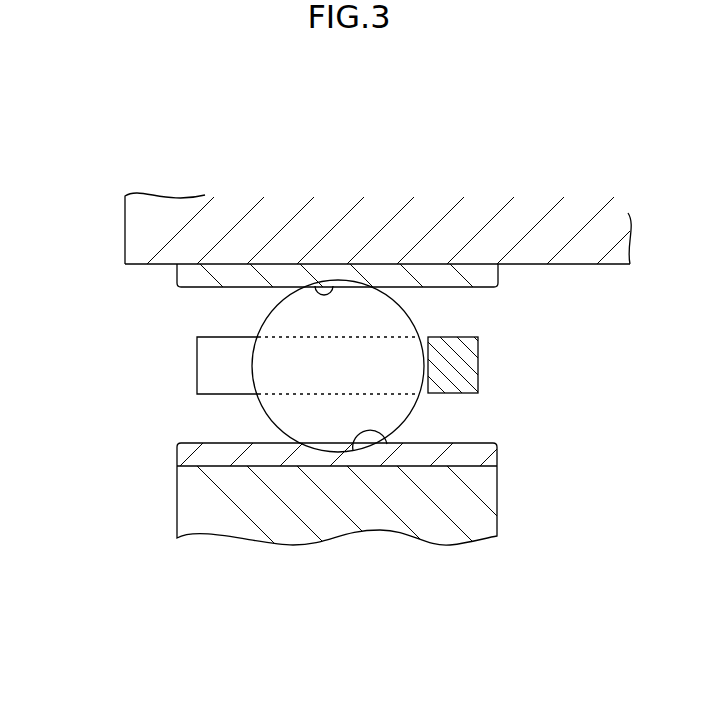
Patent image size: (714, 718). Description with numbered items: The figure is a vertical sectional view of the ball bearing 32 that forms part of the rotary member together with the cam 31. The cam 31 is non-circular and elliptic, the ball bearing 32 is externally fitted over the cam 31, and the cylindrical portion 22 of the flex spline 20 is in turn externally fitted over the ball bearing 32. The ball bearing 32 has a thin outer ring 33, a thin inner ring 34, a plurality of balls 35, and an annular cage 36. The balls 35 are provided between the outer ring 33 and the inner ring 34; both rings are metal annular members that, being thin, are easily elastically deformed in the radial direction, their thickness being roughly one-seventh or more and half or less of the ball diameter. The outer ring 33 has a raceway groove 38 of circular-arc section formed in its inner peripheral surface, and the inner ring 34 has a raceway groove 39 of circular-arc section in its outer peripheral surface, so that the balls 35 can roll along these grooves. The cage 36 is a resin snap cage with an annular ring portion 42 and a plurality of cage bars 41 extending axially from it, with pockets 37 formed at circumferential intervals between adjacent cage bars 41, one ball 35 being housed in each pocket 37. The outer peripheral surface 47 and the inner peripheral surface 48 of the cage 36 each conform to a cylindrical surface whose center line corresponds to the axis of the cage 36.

The flex spline 20 is at (351, 237).
The cylindrical portion 22 is at (142, 225).
The cam 31 is at (483, 493).
The ball bearing 32 is at (472, 254).
The outer ring 33 is at (232, 275).
The inner ring 34 is at (220, 459).
The ball 35 is at (285, 363).
The cage 36 is at (387, 361).
The pocket 37 is at (392, 318).
The raceway groove 38 is at (317, 289).
The raceway groove 39 is at (387, 443).
The cage bar 41 is at (300, 372).
The ring portion 42 is at (470, 377).
The outer peripheral surface 47 is at (228, 337).
The inner peripheral surface 48 is at (228, 394).